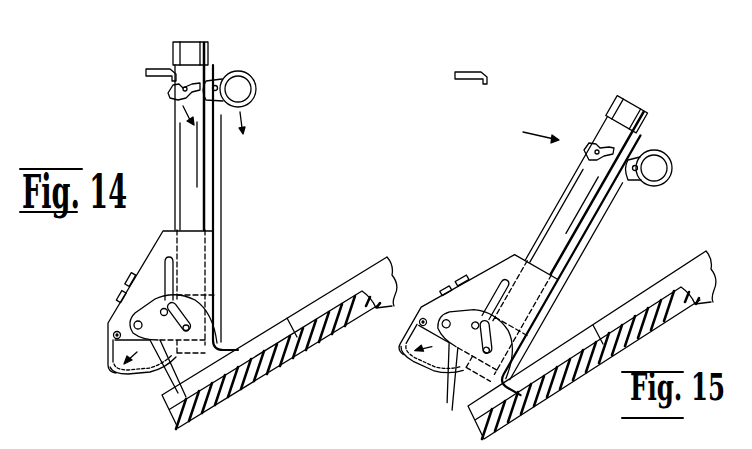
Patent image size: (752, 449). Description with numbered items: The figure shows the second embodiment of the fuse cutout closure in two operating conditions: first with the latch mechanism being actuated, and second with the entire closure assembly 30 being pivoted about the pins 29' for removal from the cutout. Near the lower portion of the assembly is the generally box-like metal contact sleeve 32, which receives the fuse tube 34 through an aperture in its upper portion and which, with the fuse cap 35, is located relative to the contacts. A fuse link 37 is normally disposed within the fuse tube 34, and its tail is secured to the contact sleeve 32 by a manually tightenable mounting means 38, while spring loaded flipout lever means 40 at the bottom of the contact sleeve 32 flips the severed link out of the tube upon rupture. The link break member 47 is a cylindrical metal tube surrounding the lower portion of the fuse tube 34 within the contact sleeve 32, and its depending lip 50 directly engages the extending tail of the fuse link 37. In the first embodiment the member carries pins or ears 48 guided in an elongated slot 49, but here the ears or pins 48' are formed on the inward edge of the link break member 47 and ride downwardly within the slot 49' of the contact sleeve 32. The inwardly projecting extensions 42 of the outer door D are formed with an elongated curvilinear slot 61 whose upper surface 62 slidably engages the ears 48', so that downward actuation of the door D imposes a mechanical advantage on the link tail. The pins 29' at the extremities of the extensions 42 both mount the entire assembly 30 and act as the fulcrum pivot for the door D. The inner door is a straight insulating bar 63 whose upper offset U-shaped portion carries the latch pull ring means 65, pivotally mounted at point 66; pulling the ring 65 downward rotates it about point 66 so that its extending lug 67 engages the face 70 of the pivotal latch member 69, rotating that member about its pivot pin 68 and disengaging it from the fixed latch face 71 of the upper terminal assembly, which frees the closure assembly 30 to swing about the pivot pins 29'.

In FIG. 14, the pivot pins 29' is at (102, 323).
In FIG. 15, the pivot pins 29' is at (431, 339).
In FIG. 14, the closure assembly 30 is at (258, 380).
In FIG. 15, the closure assembly 30 is at (554, 395).
In FIG. 14, the contact sleeve 32 is at (146, 245).
In FIG. 15, the contact sleeve 32 is at (503, 261).
In FIG. 14, the fuse tube 34 is at (178, 144).
In FIG. 15, the fuse tube 34 is at (573, 189).
In FIG. 14, the fuse cap 35 is at (202, 50).
In FIG. 15, the fuse cap 35 is at (638, 127).
In FIG. 14, the fuse link 37 is at (128, 373).
In FIG. 15, the fuse link 37 is at (417, 373).
In FIG. 14, the mounting means 38 is at (125, 279).
In FIG. 15, the mounting means 38 is at (465, 276).
In FIG. 14, the flipout lever means 40 is at (108, 353).
In FIG. 15, the flipout lever means 40 is at (403, 336).
In FIG. 14, the extensions 42 is at (130, 309).
In FIG. 15, the extensions 42 is at (447, 306).
In FIG. 14, the link break member 47 is at (217, 301).
In FIG. 15, the link break member 47 is at (530, 331).
In FIG. 15, the pins or ears 48 is at (466, 320).
In FIG. 14, the ears or pins 48' is at (154, 299).
In FIG. 14, the elongated slot 49 is at (146, 319).
In FIG. 15, the elongated slot 49 is at (454, 331).
In FIG. 14, the slot 49' is at (183, 273).
In FIG. 15, the slot 49' is at (508, 298).
In FIG. 14, the depending lip 50 is at (165, 367).
In FIG. 15, the depending lip 50 is at (453, 381).
In FIG. 14, the curvilinear slot 61 is at (190, 328).
In FIG. 15, the curvilinear slot 61 is at (487, 311).
In FIG. 14, the upper surface of slot 62 is at (186, 314).
In FIG. 15, the upper surface of slot 62 is at (490, 335).
In FIG. 14, the straight bar 63 is at (222, 146).
In FIG. 15, the straight bar 63 is at (607, 221).
In FIG. 14, the latch pull ring means 65 is at (257, 90).
In FIG. 15, the latch pull ring means 65 is at (662, 187).
In FIG. 14, the pivot point 66 is at (218, 88).
In FIG. 15, the pivot point 66 is at (638, 168).
In FIG. 14, the extending lug 67 is at (210, 78).
In FIG. 15, the extending lug 67 is at (626, 191).
In FIG. 14, the pivot pin 68 is at (178, 98).
In FIG. 15, the pivot pin 68 is at (590, 158).
In FIG. 14, the pivotal latch member 69 is at (168, 93).
In FIG. 15, the pivotal latch member 69 is at (588, 146).
In FIG. 14, the face 70 is at (190, 52).
In FIG. 15, the face 70 is at (628, 118).
In FIG. 14, the fixed latch face 71 is at (173, 72).
In FIG. 15, the fixed latch face 71 is at (487, 82).
In FIG. 14, the door D is at (322, 344).
In FIG. 15, the door D is at (662, 330).